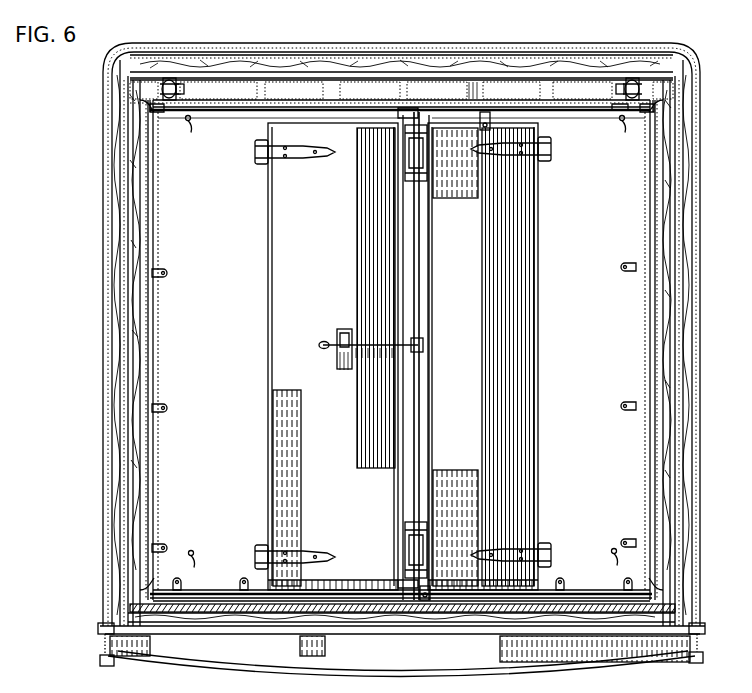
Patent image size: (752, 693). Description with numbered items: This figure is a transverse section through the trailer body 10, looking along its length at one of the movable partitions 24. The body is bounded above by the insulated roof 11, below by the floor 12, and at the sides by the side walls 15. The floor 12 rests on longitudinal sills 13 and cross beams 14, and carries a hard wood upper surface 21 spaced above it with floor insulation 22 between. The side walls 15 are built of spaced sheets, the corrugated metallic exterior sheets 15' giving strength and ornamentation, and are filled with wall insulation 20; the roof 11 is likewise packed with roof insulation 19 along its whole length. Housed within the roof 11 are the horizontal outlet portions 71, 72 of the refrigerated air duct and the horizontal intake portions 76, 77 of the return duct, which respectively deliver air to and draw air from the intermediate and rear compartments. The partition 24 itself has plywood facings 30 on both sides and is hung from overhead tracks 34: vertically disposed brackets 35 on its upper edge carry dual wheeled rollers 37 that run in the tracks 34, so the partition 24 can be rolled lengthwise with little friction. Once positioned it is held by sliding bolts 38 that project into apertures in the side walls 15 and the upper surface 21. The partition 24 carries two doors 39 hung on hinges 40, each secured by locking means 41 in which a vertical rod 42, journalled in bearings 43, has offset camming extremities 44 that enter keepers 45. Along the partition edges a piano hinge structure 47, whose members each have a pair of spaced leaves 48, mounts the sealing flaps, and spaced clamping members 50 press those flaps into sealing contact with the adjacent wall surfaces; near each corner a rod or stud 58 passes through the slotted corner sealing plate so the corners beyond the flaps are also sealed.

The trailer body 10 is at (703, 213).
The roof 11 is at (450, 60).
The floor 12 is at (514, 626).
The longitudinal sills 13 is at (100, 652).
The cross beams 14 is at (227, 672).
The side walls 15 is at (398, 343).
The corrugated exterior sheets 15' is at (394, 351).
The roof insulation 19 is at (542, 70).
The wall insulation 20 is at (137, 460).
The upper floor surface 21 is at (385, 598).
The floor insulation 22 is at (277, 618).
The partition 24 is at (659, 526).
The facings 30 is at (585, 444).
The tracks 34 is at (186, 88).
The brackets 35 is at (157, 106).
The dual wheeled rollers 37 is at (172, 78).
The sliding bolts 38 is at (194, 132).
The door 39 is at (271, 442).
The hinges 40 is at (259, 166).
The locking means 41 is at (389, 332).
The bolt or rod 42 is at (420, 378).
The bearings 43 is at (429, 177).
The camming extremities 44 is at (449, 105).
The keepers 45 is at (398, 106).
The piano hinge structure 47 is at (154, 218).
The hinge leaves 48 is at (154, 333).
The clamping members 50 is at (165, 275).
The rod or stud 58 is at (148, 104).
The outlet portion 71 is at (499, 80).
The outlet portion 72 is at (605, 80).
The intake portion 76 is at (307, 84).
The intake portion 77 is at (382, 84).